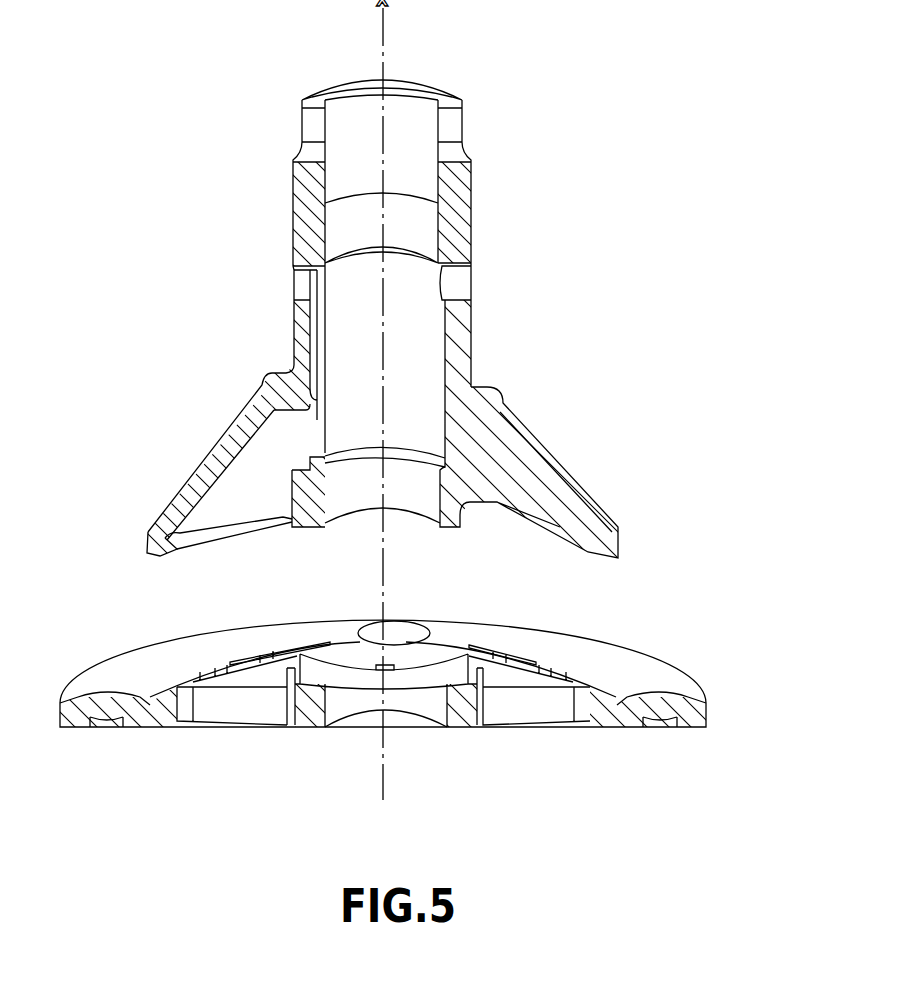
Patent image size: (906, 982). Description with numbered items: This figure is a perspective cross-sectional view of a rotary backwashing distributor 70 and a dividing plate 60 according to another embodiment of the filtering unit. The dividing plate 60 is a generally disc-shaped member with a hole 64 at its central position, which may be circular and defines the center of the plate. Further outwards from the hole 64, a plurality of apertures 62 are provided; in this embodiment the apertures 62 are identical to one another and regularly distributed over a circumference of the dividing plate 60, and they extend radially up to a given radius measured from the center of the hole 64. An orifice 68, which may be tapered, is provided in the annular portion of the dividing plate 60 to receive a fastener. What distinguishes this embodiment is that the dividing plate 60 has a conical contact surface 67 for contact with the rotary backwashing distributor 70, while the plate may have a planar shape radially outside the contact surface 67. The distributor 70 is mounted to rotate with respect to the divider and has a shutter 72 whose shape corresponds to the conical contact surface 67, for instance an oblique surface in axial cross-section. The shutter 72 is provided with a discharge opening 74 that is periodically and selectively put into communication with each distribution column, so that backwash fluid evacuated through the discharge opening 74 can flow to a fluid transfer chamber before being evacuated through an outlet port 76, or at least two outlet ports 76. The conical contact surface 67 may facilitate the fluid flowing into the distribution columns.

The dividing plate 60 is at (401, 496).
The apertures 62 is at (248, 708).
The hole 64 is at (418, 702).
The conical contact surface 67 is at (593, 683).
The orifice 68 is at (404, 621).
The rotary backwashing distributor 70 is at (400, 491).
The shutter 72 is at (157, 553).
The discharge opening 74 is at (245, 539).
The outlet port 76 is at (297, 282).